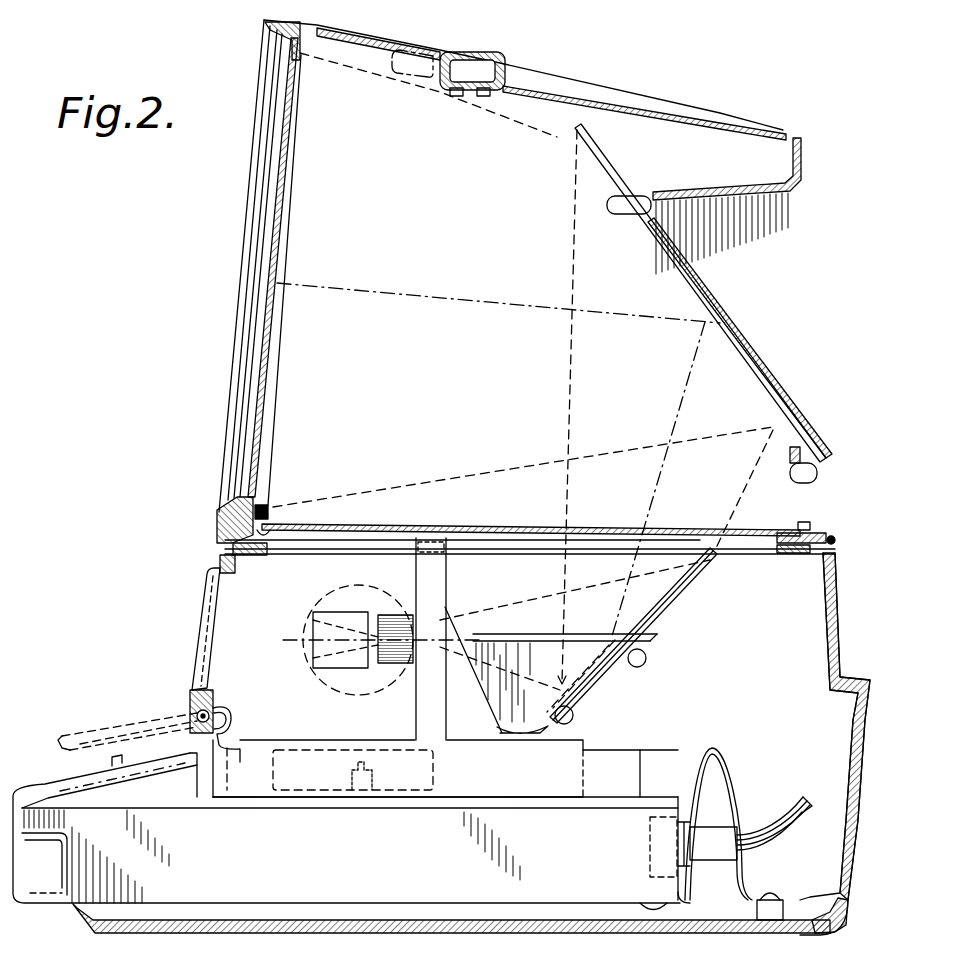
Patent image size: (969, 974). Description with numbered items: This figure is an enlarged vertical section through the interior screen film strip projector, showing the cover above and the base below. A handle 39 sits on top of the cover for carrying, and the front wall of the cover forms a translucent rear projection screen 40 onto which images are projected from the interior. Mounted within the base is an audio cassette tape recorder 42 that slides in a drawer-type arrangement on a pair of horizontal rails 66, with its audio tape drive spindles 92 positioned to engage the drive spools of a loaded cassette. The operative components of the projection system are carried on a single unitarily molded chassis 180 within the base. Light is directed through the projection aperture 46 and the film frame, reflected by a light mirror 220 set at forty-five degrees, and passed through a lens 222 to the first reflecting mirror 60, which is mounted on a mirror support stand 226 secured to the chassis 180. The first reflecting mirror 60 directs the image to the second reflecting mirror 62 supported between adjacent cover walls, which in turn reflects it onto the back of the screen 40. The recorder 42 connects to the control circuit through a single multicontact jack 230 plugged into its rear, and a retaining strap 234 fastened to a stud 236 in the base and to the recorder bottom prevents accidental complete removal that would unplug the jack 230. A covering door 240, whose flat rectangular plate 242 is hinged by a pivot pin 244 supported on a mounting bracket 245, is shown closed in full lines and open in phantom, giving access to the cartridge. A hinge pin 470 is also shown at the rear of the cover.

The handle 39 is at (471, 52).
The rear projection screen 40 is at (278, 213).
The audio cassette tape recorder 42 is at (441, 744).
The projection aperture 46 is at (333, 612).
The first reflecting mirror 60 is at (668, 598).
The second reflecting mirror 62 is at (738, 338).
The horizontal rails 66 is at (343, 800).
The audio tape drive spindles 92 is at (374, 775).
The chassis 180 is at (428, 725).
The light mirror 220 is at (346, 668).
The lens 222 is at (410, 616).
The mirror support stand 226 is at (575, 720).
The multicontact jack 230 is at (715, 855).
The retaining strap 234 is at (728, 752).
The stud 236 is at (780, 897).
The covering door 240 is at (166, 700).
The rectangular plate 242 is at (204, 637).
The pivot pin 244 is at (208, 714).
The mounting bracket 245 is at (232, 722).
The hinge pin 470 is at (838, 543).